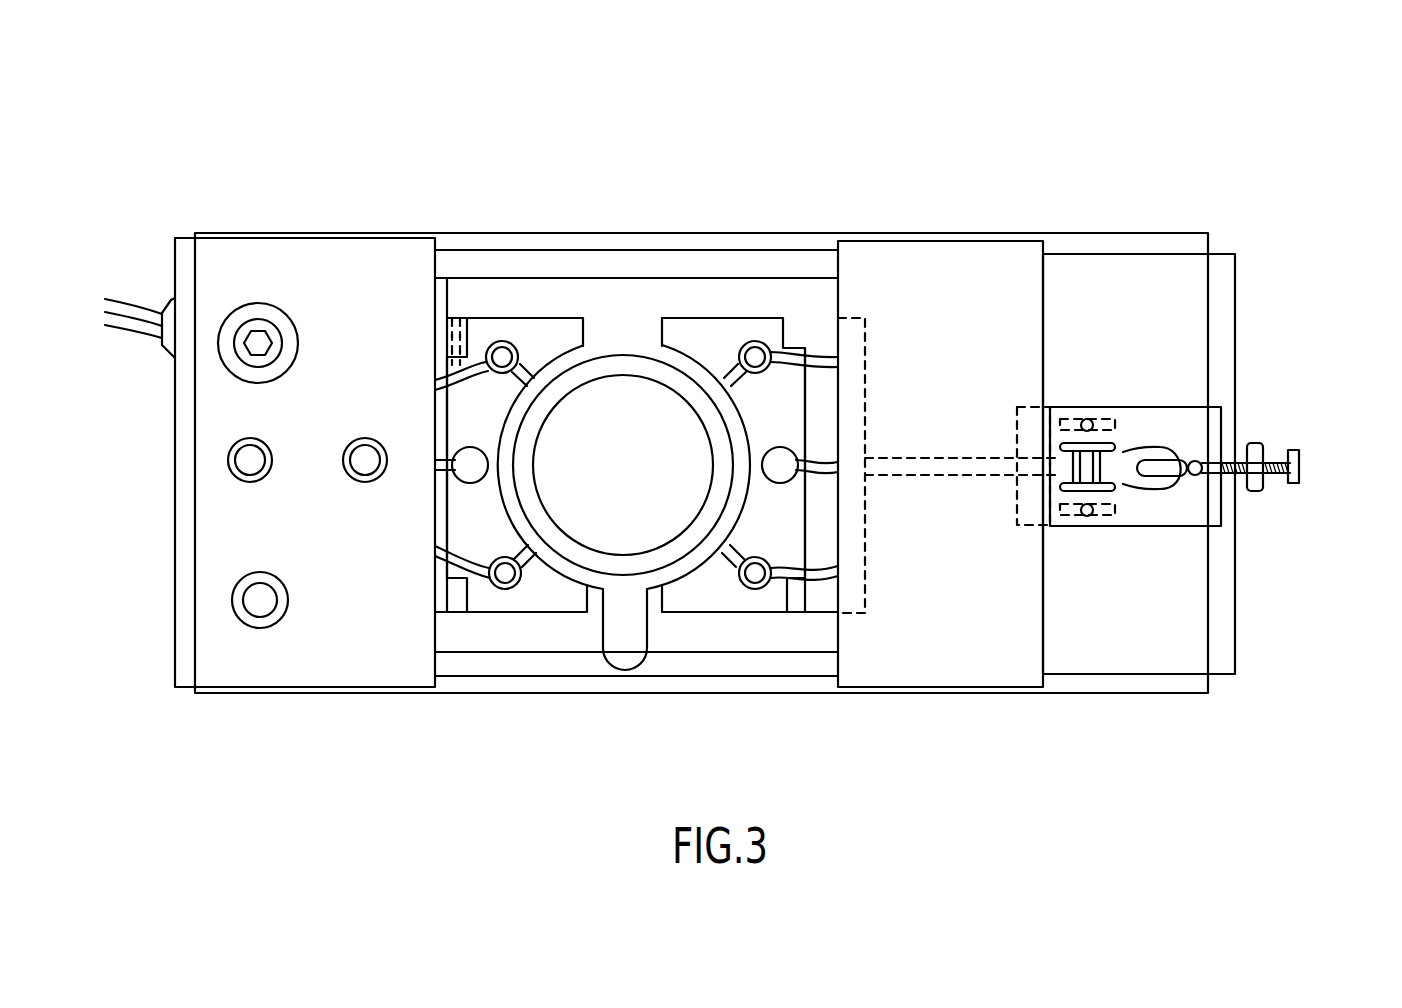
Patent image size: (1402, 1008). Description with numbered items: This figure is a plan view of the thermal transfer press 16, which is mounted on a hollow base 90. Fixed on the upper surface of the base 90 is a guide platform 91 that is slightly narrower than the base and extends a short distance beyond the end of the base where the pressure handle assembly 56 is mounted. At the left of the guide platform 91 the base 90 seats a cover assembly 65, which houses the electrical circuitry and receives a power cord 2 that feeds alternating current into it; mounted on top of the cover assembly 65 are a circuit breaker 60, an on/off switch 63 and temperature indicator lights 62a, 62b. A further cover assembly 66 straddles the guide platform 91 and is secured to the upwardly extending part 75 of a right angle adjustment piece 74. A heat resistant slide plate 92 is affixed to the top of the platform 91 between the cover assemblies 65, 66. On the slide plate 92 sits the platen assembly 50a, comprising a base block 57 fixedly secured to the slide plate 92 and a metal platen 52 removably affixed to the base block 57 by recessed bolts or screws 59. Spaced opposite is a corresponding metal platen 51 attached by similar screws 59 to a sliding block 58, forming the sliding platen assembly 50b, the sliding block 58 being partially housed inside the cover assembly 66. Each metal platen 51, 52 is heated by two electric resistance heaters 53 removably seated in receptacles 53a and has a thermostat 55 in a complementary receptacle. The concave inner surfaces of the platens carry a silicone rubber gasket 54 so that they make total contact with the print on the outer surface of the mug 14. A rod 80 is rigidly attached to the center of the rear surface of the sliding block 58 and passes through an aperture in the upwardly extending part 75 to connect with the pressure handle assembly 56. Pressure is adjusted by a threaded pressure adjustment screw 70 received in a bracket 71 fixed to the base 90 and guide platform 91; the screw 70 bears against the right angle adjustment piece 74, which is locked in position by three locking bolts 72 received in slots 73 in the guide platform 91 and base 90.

The power cord 2 is at (132, 305).
The mug 14 is at (609, 482).
The thermal transfer press 16 is at (522, 218).
The platen assembly 50a is at (493, 612).
The sliding platen assembly 50b is at (773, 298).
The metal platen 51 is at (756, 536).
The metal platen 52 is at (461, 536).
The electric resistance heater 53 is at (752, 590).
The receptacle 53a is at (735, 585).
The silicone rubber gasket 54 is at (657, 350).
The thermostat 55 is at (780, 447).
The pressure handle assembly 56 is at (1137, 440).
The base block 57 is at (449, 597).
The sliding block 58 is at (825, 603).
The recessed bolts or screws 59 is at (455, 318).
The circuit breaker 60 is at (259, 304).
The temperature indicator light 62a is at (246, 438).
The temperature indicator light 62b is at (362, 438).
The on/off switch 63 is at (262, 572).
The cover assembly 65 is at (205, 640).
The cover assembly 66 is at (935, 665).
The pressure adjustment screw 70 is at (1300, 467).
The bracket 71 is at (1260, 492).
The locking bolt 72 is at (1090, 518).
The slot 73 is at (1200, 478).
The right angle adjustment piece 74 is at (1187, 527).
The upwardly extending part 75 is at (1028, 425).
The rod 80 is at (920, 478).
The hollow base 90 is at (1145, 695).
The guide platform 91 is at (1193, 648).
The slide plate 92 is at (757, 642).